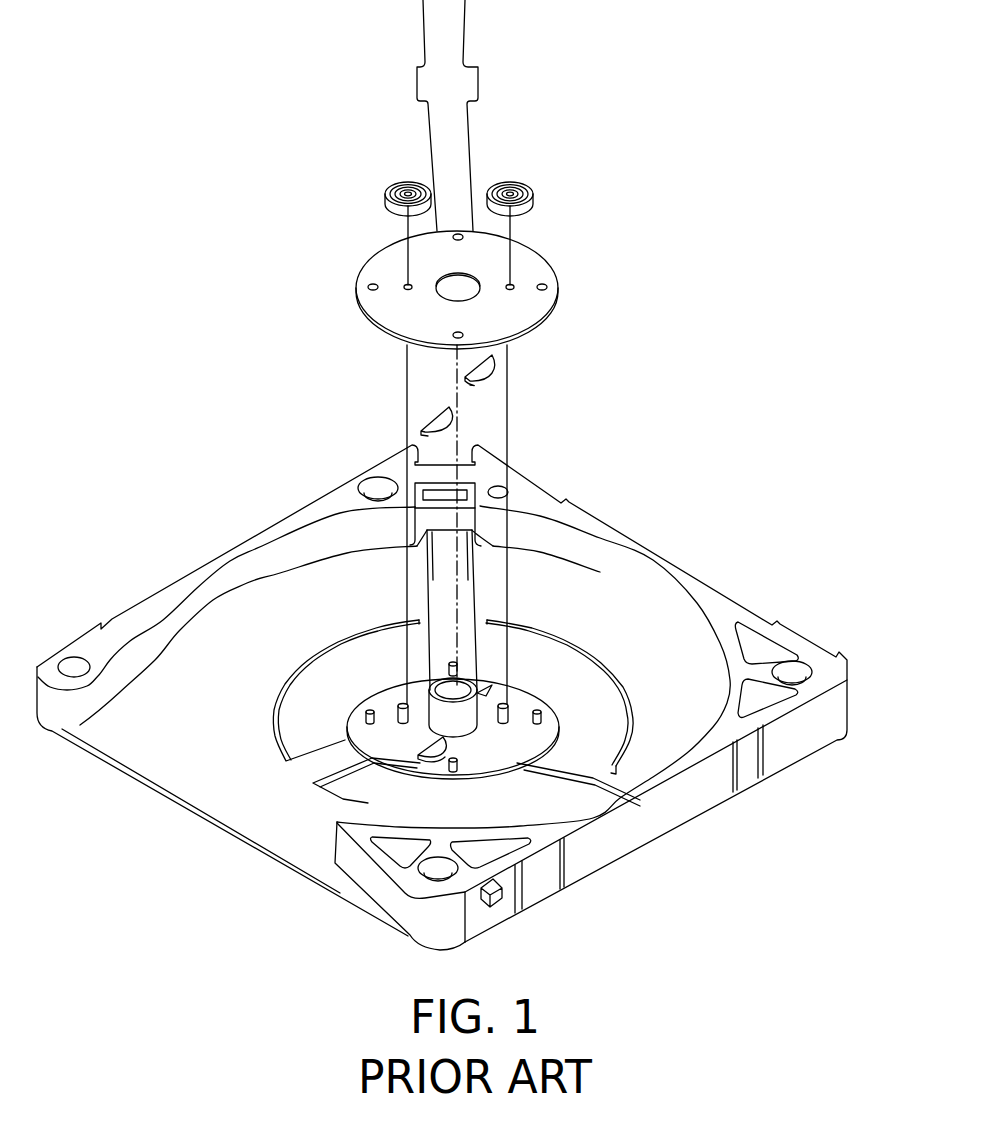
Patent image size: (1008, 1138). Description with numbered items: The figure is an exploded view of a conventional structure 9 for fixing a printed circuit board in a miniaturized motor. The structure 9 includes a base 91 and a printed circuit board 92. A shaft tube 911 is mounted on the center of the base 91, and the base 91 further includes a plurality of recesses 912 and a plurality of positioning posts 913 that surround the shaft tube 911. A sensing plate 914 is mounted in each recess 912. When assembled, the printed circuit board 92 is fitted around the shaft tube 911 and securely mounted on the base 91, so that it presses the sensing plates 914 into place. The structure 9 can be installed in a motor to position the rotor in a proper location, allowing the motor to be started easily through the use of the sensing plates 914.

The structure 9 is at (608, 102).
The base 91 is at (710, 590).
The shaft tube 911 is at (471, 712).
The recesses 912 is at (486, 687).
The positioning posts 913 is at (400, 708).
The sensing plate 914 is at (436, 420).
The printed circuit board 92 is at (546, 265).